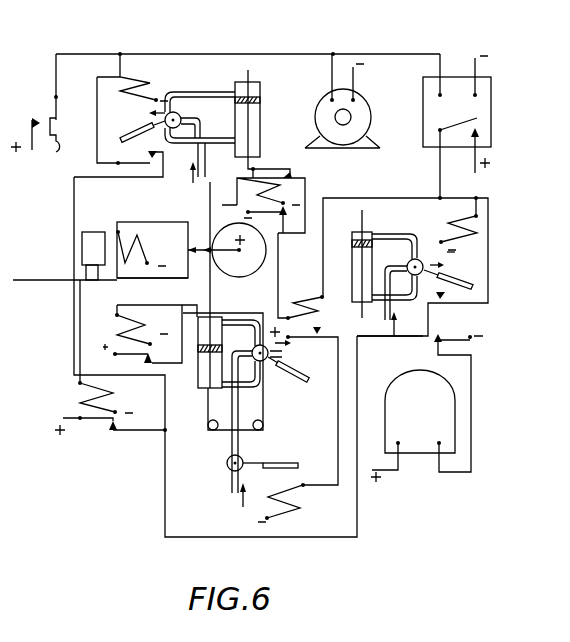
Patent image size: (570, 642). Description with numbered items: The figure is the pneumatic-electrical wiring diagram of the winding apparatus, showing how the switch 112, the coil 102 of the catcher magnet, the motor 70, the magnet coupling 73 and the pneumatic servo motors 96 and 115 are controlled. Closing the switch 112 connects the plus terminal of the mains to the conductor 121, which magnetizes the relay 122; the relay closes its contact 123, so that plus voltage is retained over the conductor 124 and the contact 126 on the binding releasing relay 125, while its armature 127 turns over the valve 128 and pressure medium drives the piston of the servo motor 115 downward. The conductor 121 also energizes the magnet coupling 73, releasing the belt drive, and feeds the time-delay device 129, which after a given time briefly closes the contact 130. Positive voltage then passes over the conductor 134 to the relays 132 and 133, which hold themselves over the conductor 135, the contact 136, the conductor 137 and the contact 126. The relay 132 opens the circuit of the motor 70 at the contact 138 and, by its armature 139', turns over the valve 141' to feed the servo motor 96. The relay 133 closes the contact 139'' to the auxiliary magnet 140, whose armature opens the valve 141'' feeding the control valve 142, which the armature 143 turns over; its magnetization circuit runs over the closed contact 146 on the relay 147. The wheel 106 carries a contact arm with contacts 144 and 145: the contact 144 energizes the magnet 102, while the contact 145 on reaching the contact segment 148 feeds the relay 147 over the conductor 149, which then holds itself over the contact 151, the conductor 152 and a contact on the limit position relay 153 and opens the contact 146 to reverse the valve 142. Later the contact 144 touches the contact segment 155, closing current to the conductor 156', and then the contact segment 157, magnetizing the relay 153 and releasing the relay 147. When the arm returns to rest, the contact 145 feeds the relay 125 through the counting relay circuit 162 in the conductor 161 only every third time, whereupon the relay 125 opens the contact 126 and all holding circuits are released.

The conductor 121 is at (226, 54).
The switch 112 is at (35, 103).
The relay 122 is at (125, 81).
The contact 123 is at (118, 162).
The armature 127 is at (125, 137).
The valve 128 is at (200, 117).
The pneumatic servo motor 115 is at (262, 127).
The magnet coupling 73 is at (372, 118).
The time-delay device 129 is at (425, 88).
The contact 130 is at (464, 153).
The conductor 149 is at (237, 185).
The contact segment 148 is at (224, 188).
The contact 151 is at (290, 174).
The relay 147 is at (306, 196).
The contact 146 is at (265, 219).
The conductor 152 is at (281, 268).
The relay 133 is at (321, 309).
The conductor 134 is at (372, 198).
The relay 132 is at (456, 222).
The pneumatic servo motor 96 is at (351, 258).
The valve 141' is at (397, 285).
The conductor 135 is at (486, 240).
The armature 139' is at (452, 273).
The contact 136 is at (432, 304).
The conductor 124 is at (73, 232).
The counting relay circuit 162 is at (93, 232).
The conductor 156' is at (65, 296).
The contact 144 is at (187, 222).
The coil of the magnet 102 is at (145, 252).
The contact 145 is at (192, 248).
The wheel 106 is at (239, 259).
The conductor 161 is at (140, 279).
The contact segment 155 is at (195, 281).
The limit position relay 153 is at (121, 325).
The contact segment 157 is at (192, 313).
The control valve 142 is at (266, 362).
The contact 139'' is at (300, 344).
The armature 143 is at (308, 384).
The auxiliary magnet 140 is at (308, 504).
The valve 141'' is at (243, 466).
The conductor 137 is at (357, 392).
The contact 138 is at (470, 403).
The motor 70 is at (386, 420).
The binding releasing relay 125 is at (108, 393).
The contact 126 is at (106, 418).